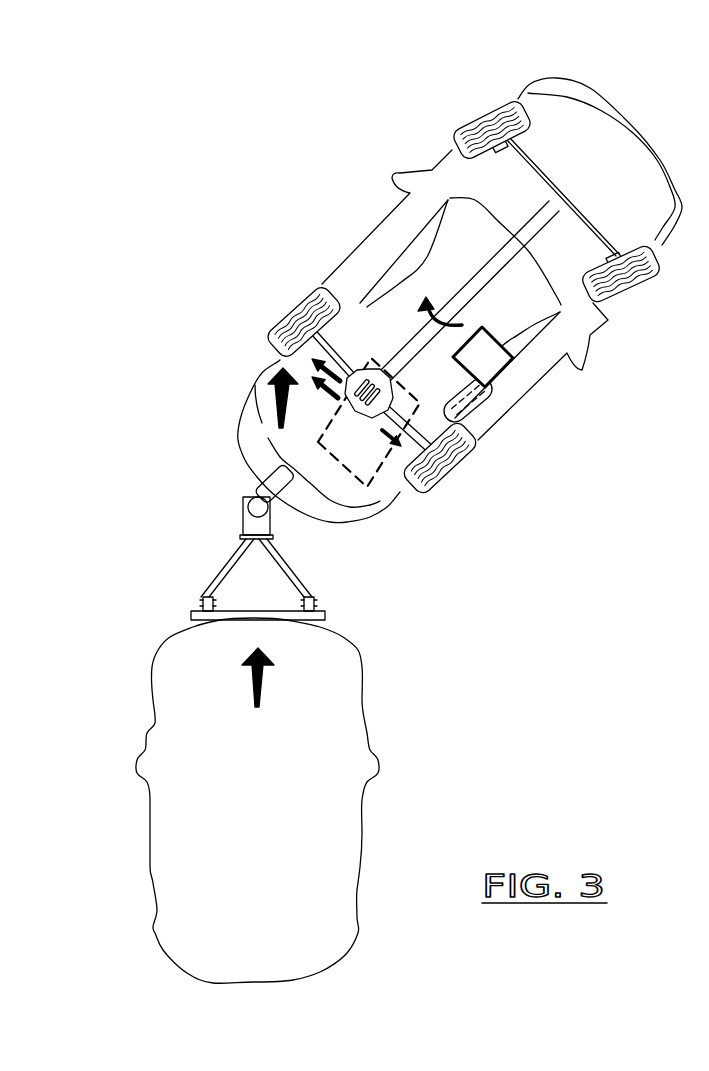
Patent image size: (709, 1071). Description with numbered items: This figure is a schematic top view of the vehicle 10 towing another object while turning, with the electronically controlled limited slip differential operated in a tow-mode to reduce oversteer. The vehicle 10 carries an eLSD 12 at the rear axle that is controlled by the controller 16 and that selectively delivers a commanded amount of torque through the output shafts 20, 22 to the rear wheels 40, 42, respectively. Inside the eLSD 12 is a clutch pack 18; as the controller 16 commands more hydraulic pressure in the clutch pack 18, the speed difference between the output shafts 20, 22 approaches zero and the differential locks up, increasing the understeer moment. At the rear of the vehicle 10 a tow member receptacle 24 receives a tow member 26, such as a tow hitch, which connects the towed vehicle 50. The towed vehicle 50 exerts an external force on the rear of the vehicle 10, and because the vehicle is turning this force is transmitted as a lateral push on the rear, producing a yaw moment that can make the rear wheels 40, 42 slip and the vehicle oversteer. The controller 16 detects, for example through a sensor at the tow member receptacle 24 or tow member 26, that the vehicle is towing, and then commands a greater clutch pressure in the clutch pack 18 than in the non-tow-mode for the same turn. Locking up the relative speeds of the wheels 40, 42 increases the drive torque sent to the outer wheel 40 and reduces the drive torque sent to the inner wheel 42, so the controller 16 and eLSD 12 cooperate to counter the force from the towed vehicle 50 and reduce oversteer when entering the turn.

The vehicle 10 is at (325, 128).
The eLSD 12 is at (371, 366).
The controller 16 is at (505, 370).
The clutch pack 18 is at (364, 362).
The output shaft 20 is at (315, 358).
The output shaft 22 is at (403, 478).
The tow member receptacle 24 is at (290, 474).
The tow member 26 is at (260, 485).
The rear wheel 40 is at (295, 310).
The rear wheel 42 is at (452, 470).
The towed vehicle 50 is at (363, 812).